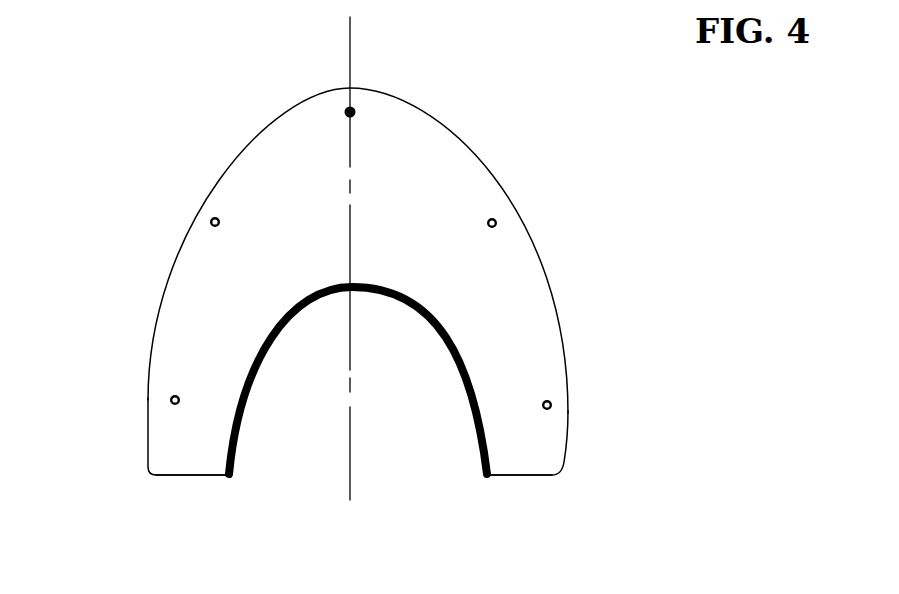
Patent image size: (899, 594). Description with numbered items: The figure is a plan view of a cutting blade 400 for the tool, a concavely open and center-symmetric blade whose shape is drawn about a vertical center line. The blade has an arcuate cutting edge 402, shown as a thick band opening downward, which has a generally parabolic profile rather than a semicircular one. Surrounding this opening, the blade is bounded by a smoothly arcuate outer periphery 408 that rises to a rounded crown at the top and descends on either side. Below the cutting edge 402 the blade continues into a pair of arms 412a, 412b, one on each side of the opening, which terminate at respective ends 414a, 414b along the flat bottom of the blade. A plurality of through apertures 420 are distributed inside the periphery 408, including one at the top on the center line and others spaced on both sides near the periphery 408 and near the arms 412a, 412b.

The cutting blade 400 is at (147, 82).
The arcuate cutting edge 402 is at (247, 388).
The outer periphery 408 is at (563, 330).
The arm 412a is at (178, 449).
The arm 412b is at (535, 448).
The end 414a is at (193, 476).
The end 414b is at (523, 476).
The through apertures 420 is at (352, 111).